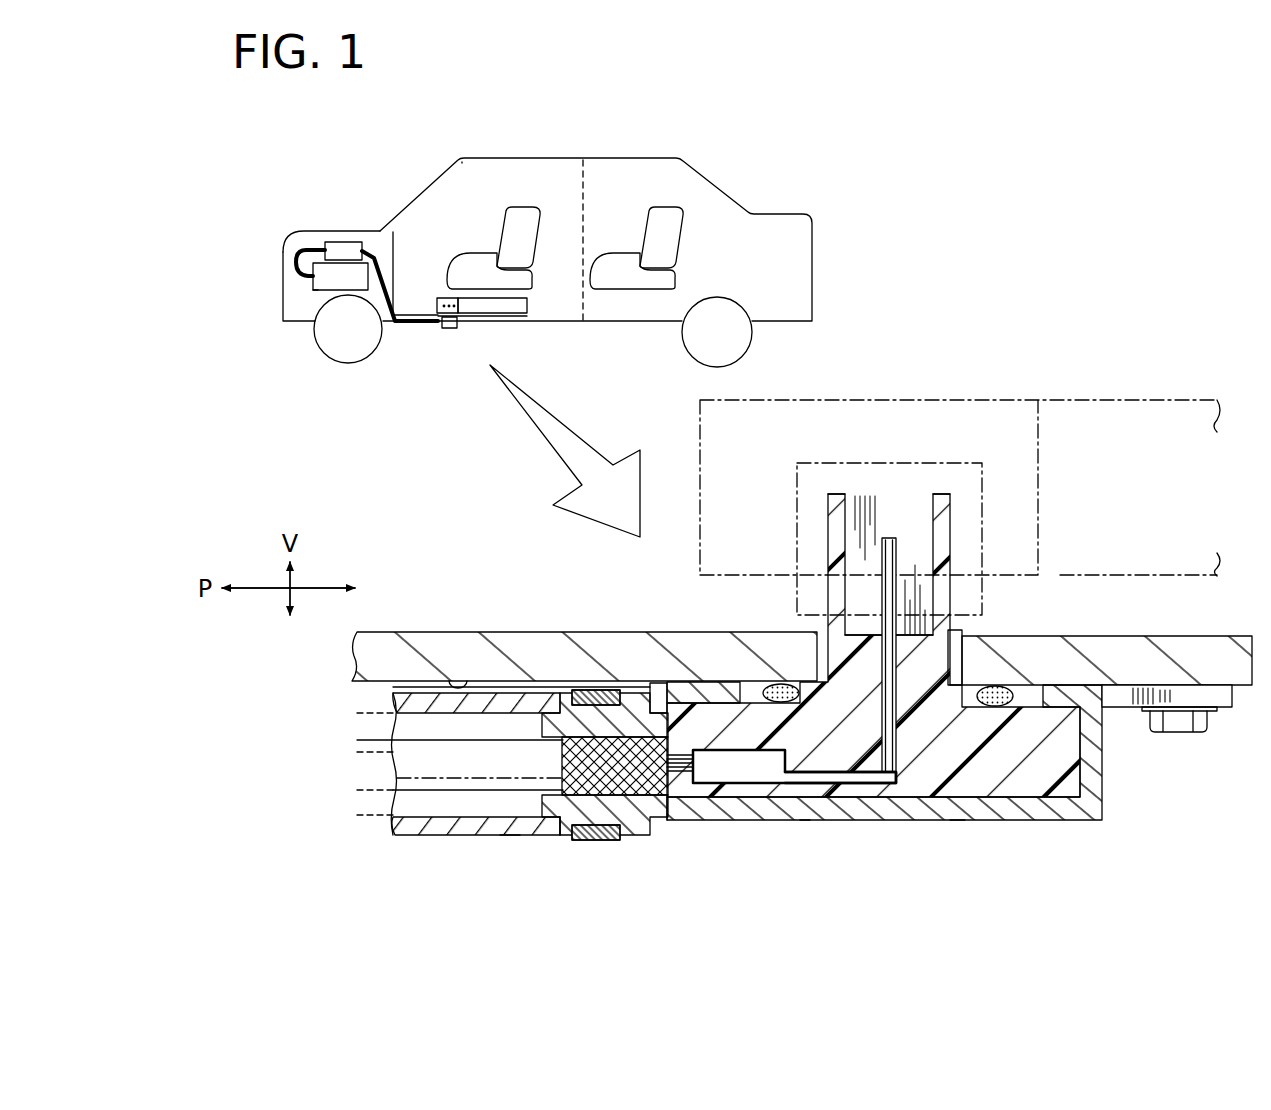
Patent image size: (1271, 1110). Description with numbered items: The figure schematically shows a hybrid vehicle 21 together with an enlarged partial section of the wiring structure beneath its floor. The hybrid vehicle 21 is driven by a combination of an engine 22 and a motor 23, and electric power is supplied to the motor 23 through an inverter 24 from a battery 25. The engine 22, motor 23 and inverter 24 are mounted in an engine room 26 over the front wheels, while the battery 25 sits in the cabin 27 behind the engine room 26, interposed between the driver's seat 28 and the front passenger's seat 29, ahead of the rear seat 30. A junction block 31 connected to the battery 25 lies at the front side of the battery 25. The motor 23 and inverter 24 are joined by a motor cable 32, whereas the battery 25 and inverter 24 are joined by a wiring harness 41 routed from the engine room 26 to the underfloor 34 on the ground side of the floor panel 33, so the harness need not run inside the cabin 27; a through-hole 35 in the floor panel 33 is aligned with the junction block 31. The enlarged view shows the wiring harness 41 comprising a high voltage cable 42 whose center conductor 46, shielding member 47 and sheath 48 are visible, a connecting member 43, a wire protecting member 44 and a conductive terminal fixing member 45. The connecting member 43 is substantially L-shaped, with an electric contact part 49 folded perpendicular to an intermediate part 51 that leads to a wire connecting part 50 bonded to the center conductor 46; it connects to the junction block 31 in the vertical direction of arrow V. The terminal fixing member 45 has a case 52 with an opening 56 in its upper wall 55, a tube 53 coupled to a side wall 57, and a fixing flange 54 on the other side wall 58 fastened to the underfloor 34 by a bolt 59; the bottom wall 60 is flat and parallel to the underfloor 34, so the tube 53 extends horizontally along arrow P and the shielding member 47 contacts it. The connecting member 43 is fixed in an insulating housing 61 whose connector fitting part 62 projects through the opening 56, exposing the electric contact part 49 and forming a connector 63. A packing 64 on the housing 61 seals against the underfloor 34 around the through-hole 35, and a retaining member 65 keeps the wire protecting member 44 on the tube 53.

The hybrid vehicle 21 is at (737, 183).
The engine 22 is at (360, 278).
The motor 23 is at (318, 290).
The inverter 24 is at (344, 242).
The battery 25 is at (472, 310).
The engine room 26 is at (293, 277).
The cabin 27 is at (460, 193).
The driver's seat 28 is at (530, 207).
The front passenger's seat 29 is at (530, 207).
The rear seat 30 is at (667, 208).
The junction block 31 is at (442, 297).
The motor cable 32 is at (300, 250).
The floor panel 33 is at (557, 320).
The underfloor 34 is at (528, 323).
The through-hole 35 is at (950, 650).
The wiring harness 41 is at (420, 327).
The high voltage cable 42 is at (357, 750).
The connecting member 43 is at (957, 803).
The wire protecting member 44 is at (510, 826).
The terminal fixing member 45 is at (1093, 770).
The center conductor 46 is at (680, 772).
The shielding member 47 is at (660, 795).
The sheath 48 is at (420, 790).
The electric contact part 49 is at (890, 563).
The wire connecting part 50 is at (747, 775).
The intermediate part 51 is at (847, 782).
The case 52 is at (918, 808).
The tube 53 is at (557, 806).
The fixing flange 54 is at (1223, 704).
The upper wall 55 is at (692, 690).
The opening 56 is at (737, 687).
The side wall 57 is at (640, 712).
The other side wall 58 is at (1090, 745).
The bolt 59 is at (1180, 728).
The bottom wall 60 is at (803, 808).
The housing 61 is at (847, 658).
The connector fitting part 62 is at (942, 597).
The connector 63 is at (833, 560).
The packing 64 is at (997, 693).
The retaining member 65 is at (597, 688).